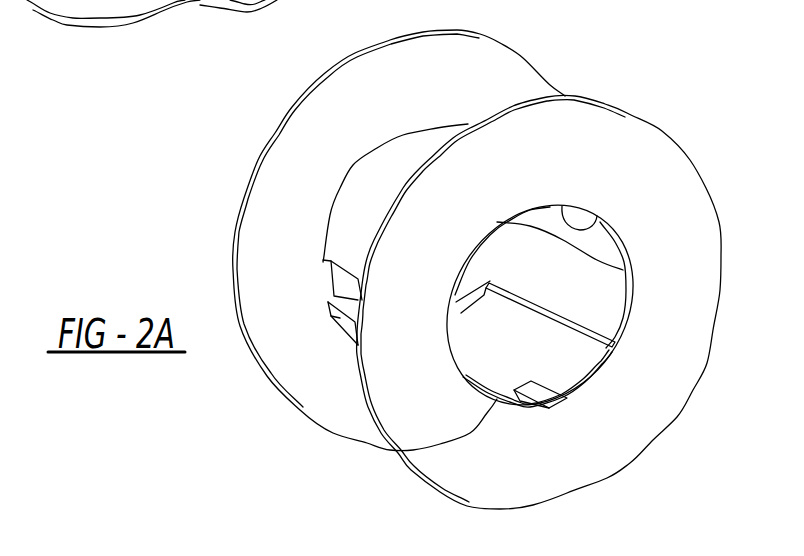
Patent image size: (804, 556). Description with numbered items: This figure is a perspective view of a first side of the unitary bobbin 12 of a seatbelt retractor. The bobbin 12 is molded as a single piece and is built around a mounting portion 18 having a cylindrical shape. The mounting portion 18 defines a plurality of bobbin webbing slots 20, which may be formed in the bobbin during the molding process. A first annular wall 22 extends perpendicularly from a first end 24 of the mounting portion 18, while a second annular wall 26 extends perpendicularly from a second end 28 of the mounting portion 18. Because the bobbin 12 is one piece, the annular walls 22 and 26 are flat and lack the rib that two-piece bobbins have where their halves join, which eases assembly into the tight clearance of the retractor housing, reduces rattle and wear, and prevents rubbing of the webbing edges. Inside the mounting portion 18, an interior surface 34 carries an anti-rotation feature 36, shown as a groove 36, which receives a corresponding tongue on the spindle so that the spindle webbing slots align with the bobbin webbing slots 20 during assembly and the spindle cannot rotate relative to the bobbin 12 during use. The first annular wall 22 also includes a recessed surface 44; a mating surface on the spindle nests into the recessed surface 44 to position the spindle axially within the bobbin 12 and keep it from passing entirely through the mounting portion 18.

The unitary bobbin 12 is at (618, 80).
The mounting portion 18 is at (353, 217).
The bobbin webbing slots 20 is at (342, 278).
The first annular wall 22 is at (500, 456).
The first end 24 is at (612, 238).
The second annular wall 26 is at (480, 70).
The second end 28 is at (372, 147).
The interior surface 34 is at (560, 365).
The anti-rotation feature (groove) 36 is at (543, 397).
The recessed surface 44 is at (580, 227).